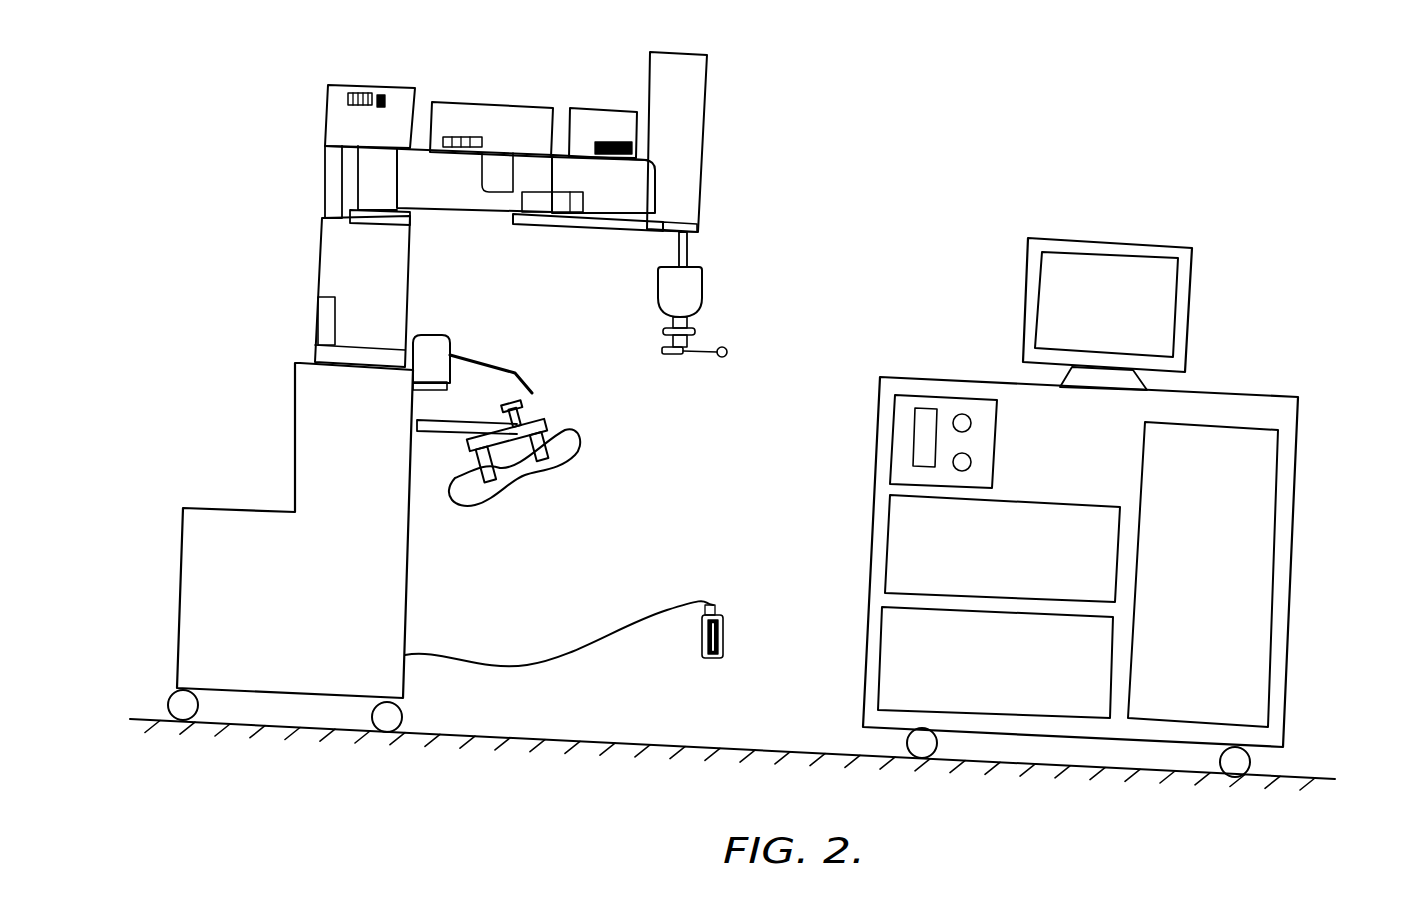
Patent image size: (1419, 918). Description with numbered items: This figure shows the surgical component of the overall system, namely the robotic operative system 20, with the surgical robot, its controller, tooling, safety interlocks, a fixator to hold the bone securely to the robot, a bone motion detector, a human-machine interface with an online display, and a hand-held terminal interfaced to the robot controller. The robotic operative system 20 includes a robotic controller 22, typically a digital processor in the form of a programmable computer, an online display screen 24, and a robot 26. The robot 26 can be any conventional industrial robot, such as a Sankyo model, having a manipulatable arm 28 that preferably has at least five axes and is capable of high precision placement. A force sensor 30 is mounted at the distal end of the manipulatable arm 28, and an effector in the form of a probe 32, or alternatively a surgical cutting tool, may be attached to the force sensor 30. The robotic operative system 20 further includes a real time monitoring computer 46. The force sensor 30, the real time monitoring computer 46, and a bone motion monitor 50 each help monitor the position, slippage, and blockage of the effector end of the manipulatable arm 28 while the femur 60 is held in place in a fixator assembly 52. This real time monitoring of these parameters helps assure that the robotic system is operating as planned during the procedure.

The robotic operative system 20 is at (1322, 146).
The robotic controller 22 is at (887, 535).
The online display screen 24 is at (1188, 292).
The robot 26 is at (292, 145).
The manipulatable arm 28 is at (688, 250).
The force sensor 30 is at (702, 290).
The probe 32 is at (710, 357).
The real time monitoring computer 46 is at (880, 662).
The bone motion monitor 50 is at (472, 357).
The fixator assembly 52 is at (540, 420).
The femur 60 is at (510, 483).